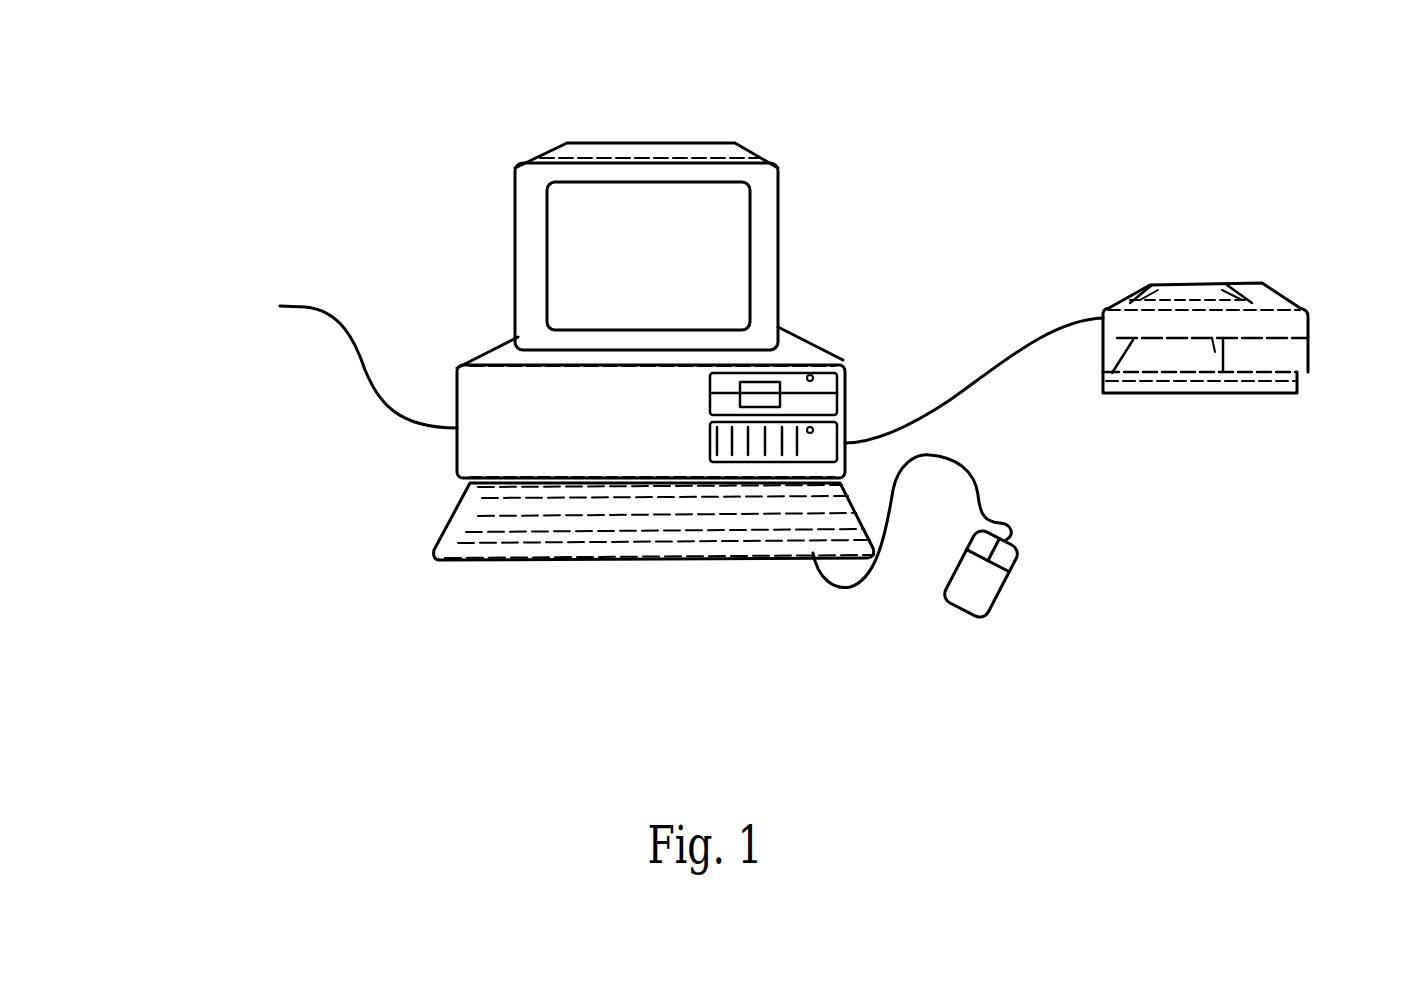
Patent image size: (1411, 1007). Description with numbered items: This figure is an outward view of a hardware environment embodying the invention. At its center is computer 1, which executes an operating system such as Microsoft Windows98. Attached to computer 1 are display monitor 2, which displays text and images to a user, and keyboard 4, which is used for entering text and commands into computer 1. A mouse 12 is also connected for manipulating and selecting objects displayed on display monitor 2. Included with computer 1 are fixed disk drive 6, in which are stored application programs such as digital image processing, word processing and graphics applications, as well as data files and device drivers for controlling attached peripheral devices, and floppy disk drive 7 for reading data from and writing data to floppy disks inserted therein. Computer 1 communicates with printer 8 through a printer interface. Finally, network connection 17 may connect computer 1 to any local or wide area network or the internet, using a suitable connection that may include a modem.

The computer 1 is at (813, 118).
The display monitor 2 is at (517, 272).
The keyboard 4 is at (518, 557).
The fixed disk drive 6 is at (750, 462).
The floppy disk drive 7 is at (843, 398).
The printer 8 is at (1318, 333).
The mouse 12 is at (968, 618).
The network connection 17 is at (400, 417).